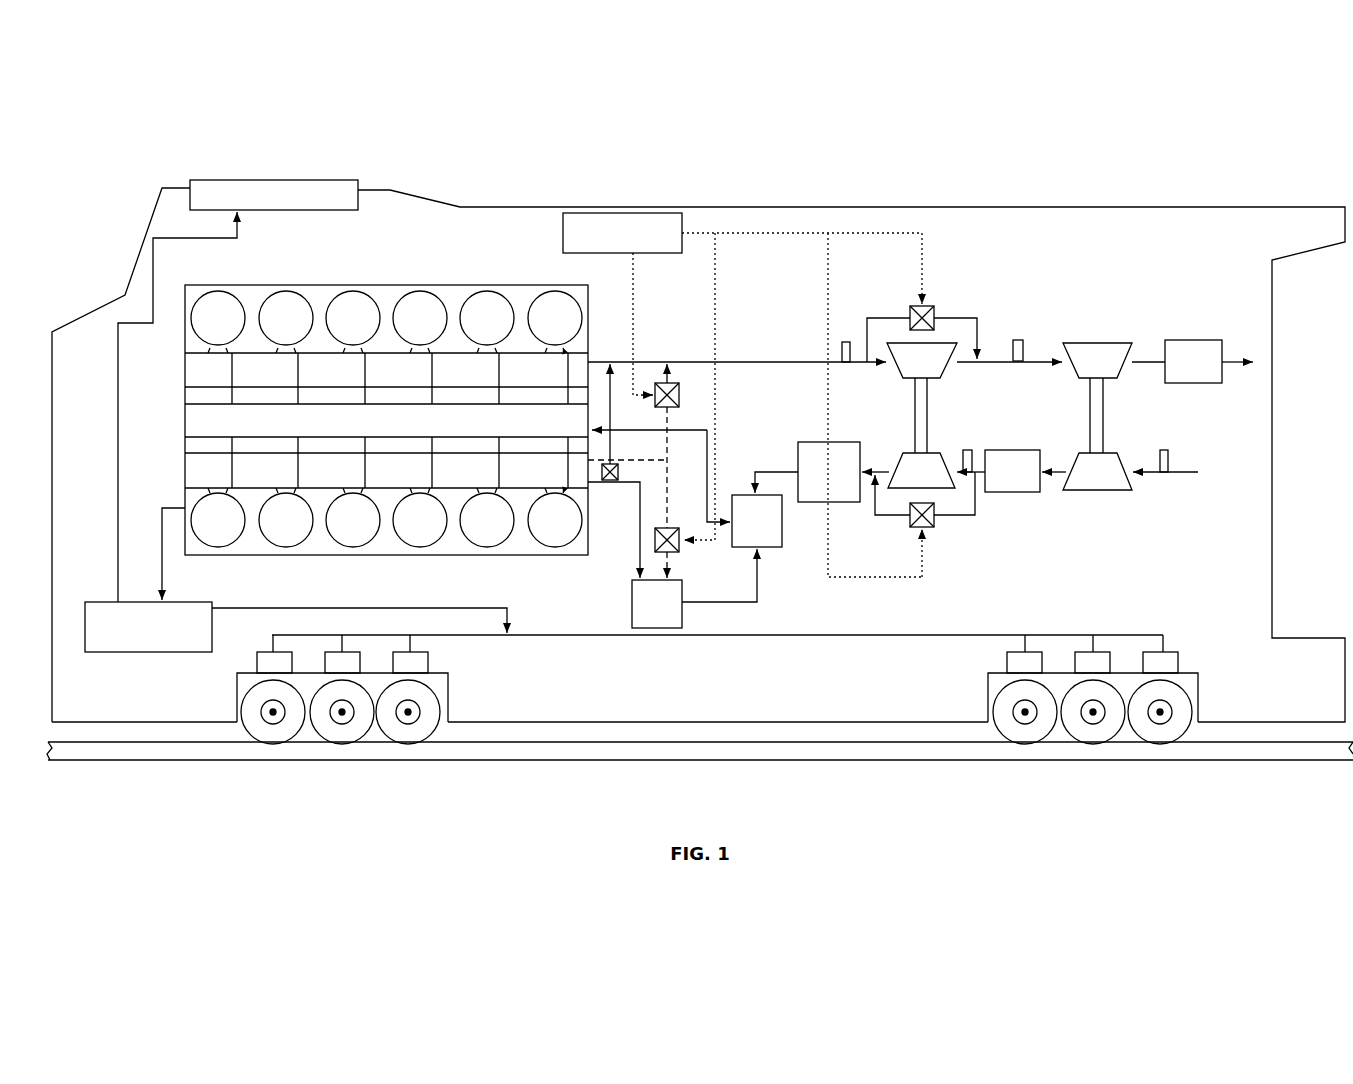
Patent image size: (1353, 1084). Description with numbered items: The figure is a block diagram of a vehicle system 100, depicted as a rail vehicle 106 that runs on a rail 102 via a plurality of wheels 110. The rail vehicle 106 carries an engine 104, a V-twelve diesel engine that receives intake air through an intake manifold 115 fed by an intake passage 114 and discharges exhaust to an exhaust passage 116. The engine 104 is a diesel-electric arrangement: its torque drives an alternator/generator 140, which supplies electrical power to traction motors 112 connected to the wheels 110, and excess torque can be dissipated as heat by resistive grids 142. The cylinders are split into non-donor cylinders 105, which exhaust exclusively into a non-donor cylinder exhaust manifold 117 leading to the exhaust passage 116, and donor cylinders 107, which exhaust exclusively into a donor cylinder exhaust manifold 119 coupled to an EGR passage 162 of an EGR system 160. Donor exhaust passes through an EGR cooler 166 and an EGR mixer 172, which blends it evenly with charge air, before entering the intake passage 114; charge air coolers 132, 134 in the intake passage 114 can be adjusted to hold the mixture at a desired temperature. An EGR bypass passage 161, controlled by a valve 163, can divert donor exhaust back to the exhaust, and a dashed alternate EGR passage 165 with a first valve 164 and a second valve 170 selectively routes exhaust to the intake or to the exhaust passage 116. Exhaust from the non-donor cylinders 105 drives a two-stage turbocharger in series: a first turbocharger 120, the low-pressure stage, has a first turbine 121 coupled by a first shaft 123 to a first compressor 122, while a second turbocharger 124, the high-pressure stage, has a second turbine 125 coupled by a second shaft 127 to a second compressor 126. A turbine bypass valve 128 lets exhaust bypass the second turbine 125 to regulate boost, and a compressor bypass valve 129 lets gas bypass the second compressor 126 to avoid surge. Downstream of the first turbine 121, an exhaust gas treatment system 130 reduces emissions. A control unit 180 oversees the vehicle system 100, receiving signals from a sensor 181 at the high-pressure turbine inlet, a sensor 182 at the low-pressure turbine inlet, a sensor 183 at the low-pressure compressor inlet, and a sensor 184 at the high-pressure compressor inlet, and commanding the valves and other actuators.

The vehicle system 100 is at (1172, 178).
The rail 102 is at (1264, 762).
The engine 104 is at (485, 276).
The non-donor cylinders 105 is at (355, 292).
The rail vehicle 106 is at (1022, 207).
The donor cylinders 107 is at (355, 548).
The wheels 110 is at (430, 702).
The traction motors 112 is at (430, 663).
The intake passage 114 is at (1150, 474).
The intake manifold 115 is at (393, 421).
The exhaust passage 116 is at (752, 362).
The non-donor cylinder exhaust manifold 117 is at (185, 372).
The donor cylinder exhaust manifold 119 is at (185, 472).
The first turbocharger 120 is at (1100, 508).
The first turbine 121 is at (1114, 360).
The first compressor 122 is at (1087, 471).
The first shaft 123 is at (1106, 437).
The second turbocharger 124 is at (956, 530).
The second turbine 125 is at (922, 360).
The second compressor 126 is at (923, 470).
The second shaft 127 is at (930, 437).
The turbine bypass valve 128 is at (934, 308).
The compressor bypass valve 129 is at (910, 522).
The exhaust gas treatment system 130 is at (1209, 361).
The charge air cooler 132 is at (1012, 471).
The charge air cooler 134 is at (829, 472).
The alternator/generator 140 is at (296, 580).
The resistive grids 142 is at (343, 180).
The EGR system 160 is at (778, 592).
The EGR bypass passage 161 is at (612, 398).
The EGR passage 162 is at (638, 508).
The valve 163 is at (612, 462).
The first valve 164 is at (680, 397).
The alternate EGR passage 165 is at (670, 465).
The EGR cooler 166 is at (694, 588).
The second valve 170 is at (676, 553).
The EGR mixer 172 is at (695, 488).
The control unit 180 is at (742, 395).
The sensor 181 is at (846, 342).
The sensor 182 is at (1018, 340).
The sensor 183 is at (1164, 450).
The sensor 184 is at (967, 450).